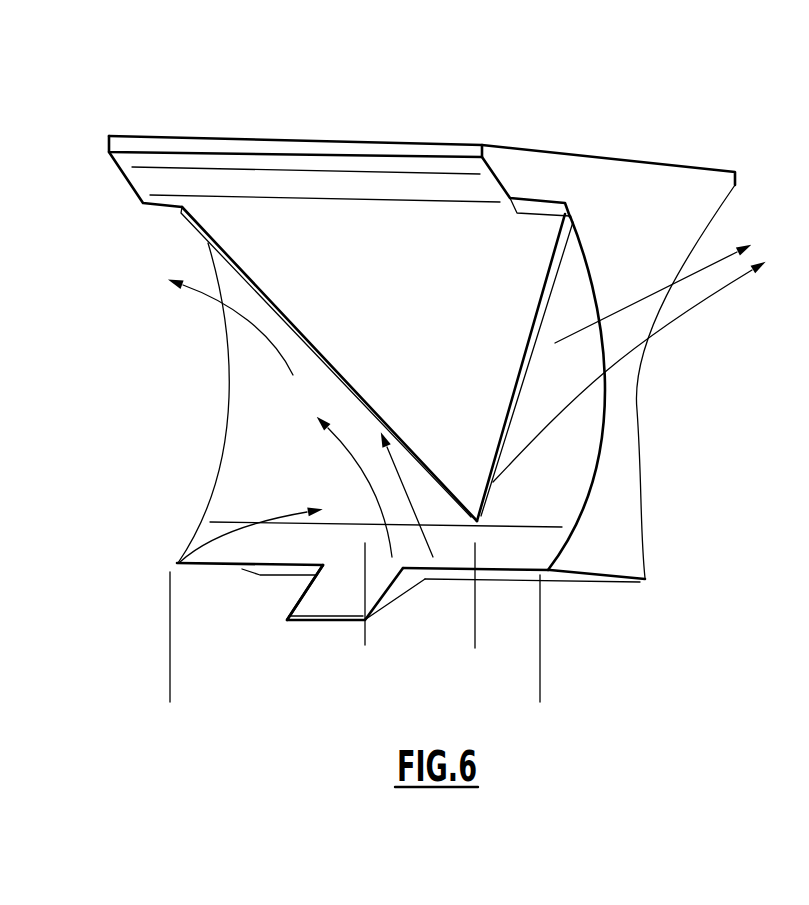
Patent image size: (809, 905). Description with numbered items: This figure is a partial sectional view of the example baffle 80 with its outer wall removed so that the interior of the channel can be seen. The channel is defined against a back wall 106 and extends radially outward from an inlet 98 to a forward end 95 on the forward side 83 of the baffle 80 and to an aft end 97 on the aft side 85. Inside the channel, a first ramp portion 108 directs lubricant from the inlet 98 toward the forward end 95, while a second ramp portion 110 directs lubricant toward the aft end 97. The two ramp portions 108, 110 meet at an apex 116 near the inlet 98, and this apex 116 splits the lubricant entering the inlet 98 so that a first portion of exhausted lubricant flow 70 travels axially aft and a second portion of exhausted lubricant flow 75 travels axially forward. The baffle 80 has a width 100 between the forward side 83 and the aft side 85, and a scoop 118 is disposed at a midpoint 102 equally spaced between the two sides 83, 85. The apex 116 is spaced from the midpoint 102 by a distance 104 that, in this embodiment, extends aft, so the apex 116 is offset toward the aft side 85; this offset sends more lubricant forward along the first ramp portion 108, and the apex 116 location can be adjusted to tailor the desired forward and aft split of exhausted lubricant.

The baffle 80 is at (594, 77).
The aft end 97 is at (572, 225).
The forward end 95 is at (183, 219).
The first portion of exhausted lubricant flow 70 is at (710, 294).
The second portion of exhausted lubricant flow 75 is at (248, 313).
The second ramp portion 110 is at (522, 385).
The forward side 83 is at (228, 382).
The aft side 85 is at (643, 398).
The first ramp portion 108 is at (348, 393).
The back wall 106 is at (562, 468).
The apex 116 is at (497, 508).
The inlet 98 is at (177, 562).
The scoop 118 is at (320, 590).
The midpoint 102 is at (367, 626).
The distance 104 is at (474, 638).
The width 100 is at (539, 695).